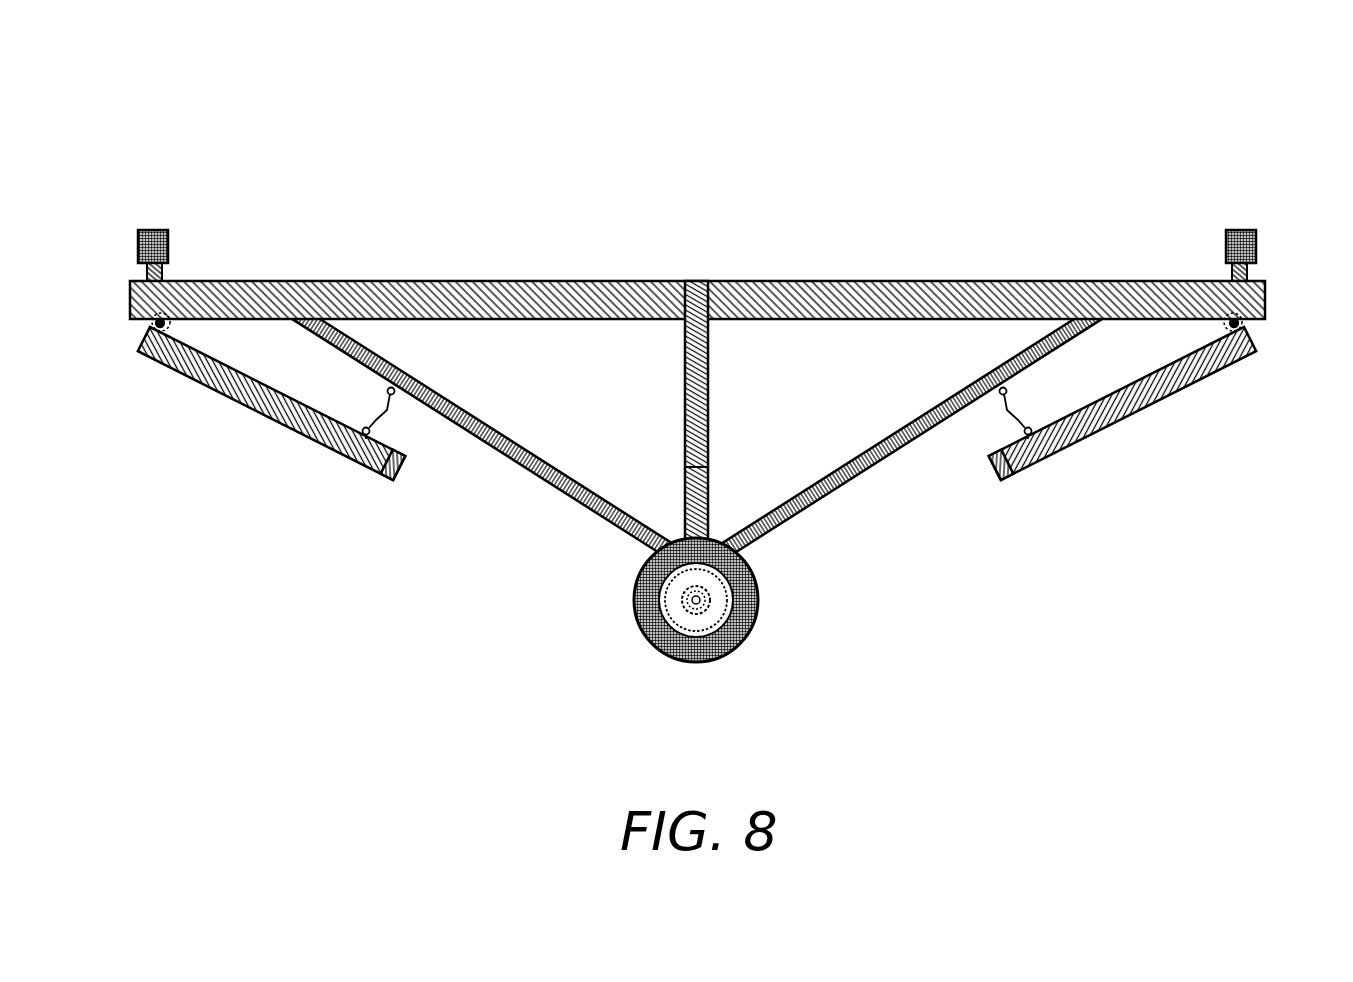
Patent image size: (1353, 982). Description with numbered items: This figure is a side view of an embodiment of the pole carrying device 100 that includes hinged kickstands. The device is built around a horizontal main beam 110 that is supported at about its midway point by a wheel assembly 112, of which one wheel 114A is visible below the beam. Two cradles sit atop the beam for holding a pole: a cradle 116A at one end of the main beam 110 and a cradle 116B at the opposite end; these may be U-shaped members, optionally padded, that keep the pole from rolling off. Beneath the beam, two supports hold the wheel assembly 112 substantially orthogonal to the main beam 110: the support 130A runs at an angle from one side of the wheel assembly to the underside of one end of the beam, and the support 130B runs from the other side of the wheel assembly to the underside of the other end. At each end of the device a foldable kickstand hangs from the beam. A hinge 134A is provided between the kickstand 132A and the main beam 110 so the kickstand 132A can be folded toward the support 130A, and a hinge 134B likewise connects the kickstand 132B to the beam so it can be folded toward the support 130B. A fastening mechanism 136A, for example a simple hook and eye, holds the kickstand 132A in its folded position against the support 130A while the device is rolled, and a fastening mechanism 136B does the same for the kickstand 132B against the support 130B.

The pole carrying device 100 is at (433, 124).
The main beam 110 is at (550, 280).
The wheel assembly 112 is at (731, 410).
The wheel 114A is at (635, 603).
The cradle 116A is at (164, 218).
The cradle 116B is at (1240, 218).
The support 130A is at (513, 405).
The support 130B is at (907, 423).
The hinged kickstand 132A is at (267, 418).
The hinged kickstand 132B is at (1127, 418).
The hinge 134A is at (150, 325).
The hinge 134B is at (1244, 325).
The fastening mechanism 136A is at (385, 413).
The fastening mechanism 136B is at (1009, 413).